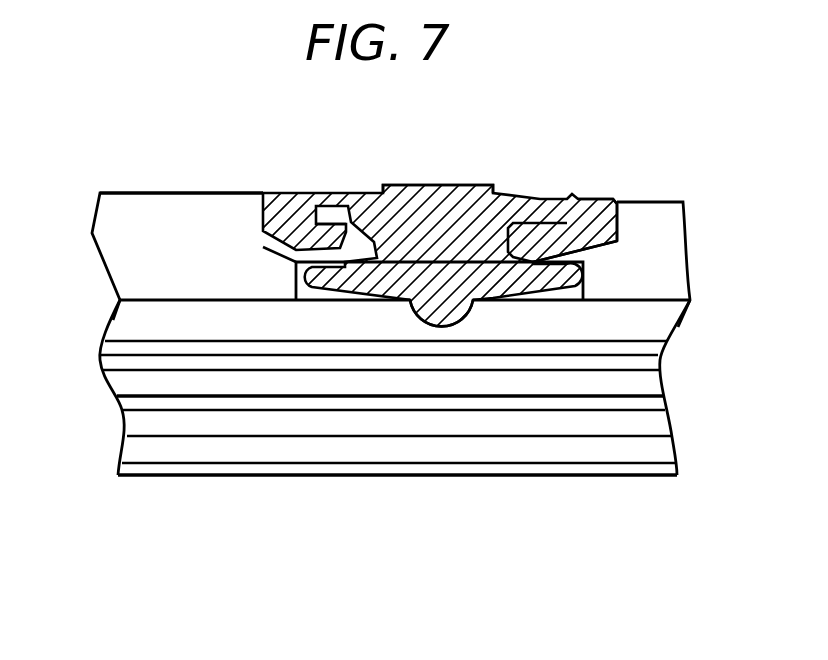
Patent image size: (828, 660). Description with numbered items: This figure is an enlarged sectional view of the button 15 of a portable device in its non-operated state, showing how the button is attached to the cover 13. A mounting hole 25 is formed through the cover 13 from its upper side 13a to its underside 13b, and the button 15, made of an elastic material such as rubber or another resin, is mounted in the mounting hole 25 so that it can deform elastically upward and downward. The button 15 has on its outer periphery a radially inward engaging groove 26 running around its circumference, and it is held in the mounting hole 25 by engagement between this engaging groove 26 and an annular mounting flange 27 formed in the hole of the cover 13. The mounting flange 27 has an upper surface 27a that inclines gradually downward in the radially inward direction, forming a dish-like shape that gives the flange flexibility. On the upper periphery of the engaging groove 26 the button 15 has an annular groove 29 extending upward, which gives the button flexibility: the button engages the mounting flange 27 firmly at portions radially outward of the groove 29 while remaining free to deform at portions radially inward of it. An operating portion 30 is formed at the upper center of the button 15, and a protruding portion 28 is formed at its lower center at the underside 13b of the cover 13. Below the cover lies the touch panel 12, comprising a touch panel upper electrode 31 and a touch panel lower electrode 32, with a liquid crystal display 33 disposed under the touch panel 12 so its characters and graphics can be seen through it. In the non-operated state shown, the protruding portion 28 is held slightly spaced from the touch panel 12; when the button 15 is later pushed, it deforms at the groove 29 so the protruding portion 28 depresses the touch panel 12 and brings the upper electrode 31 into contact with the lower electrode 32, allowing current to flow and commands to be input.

The touch panel 12 is at (547, 364).
The cover 13 is at (126, 187).
The upper side 13a is at (242, 191).
The underside 13b is at (197, 300).
The button 15 is at (470, 184).
The mounting hole 25 is at (527, 252).
The engaging groove 26 is at (340, 250).
The mounting flange 27 is at (572, 252).
The upper surface 27a is at (595, 200).
The protruding portion 28 is at (450, 307).
The annular groove 29 is at (341, 208).
The operating portion 30 is at (408, 185).
The touch panel upper electrode 31 is at (653, 350).
The touch panel lower electrode 32 is at (638, 368).
The liquid crystal display 33 is at (343, 457).